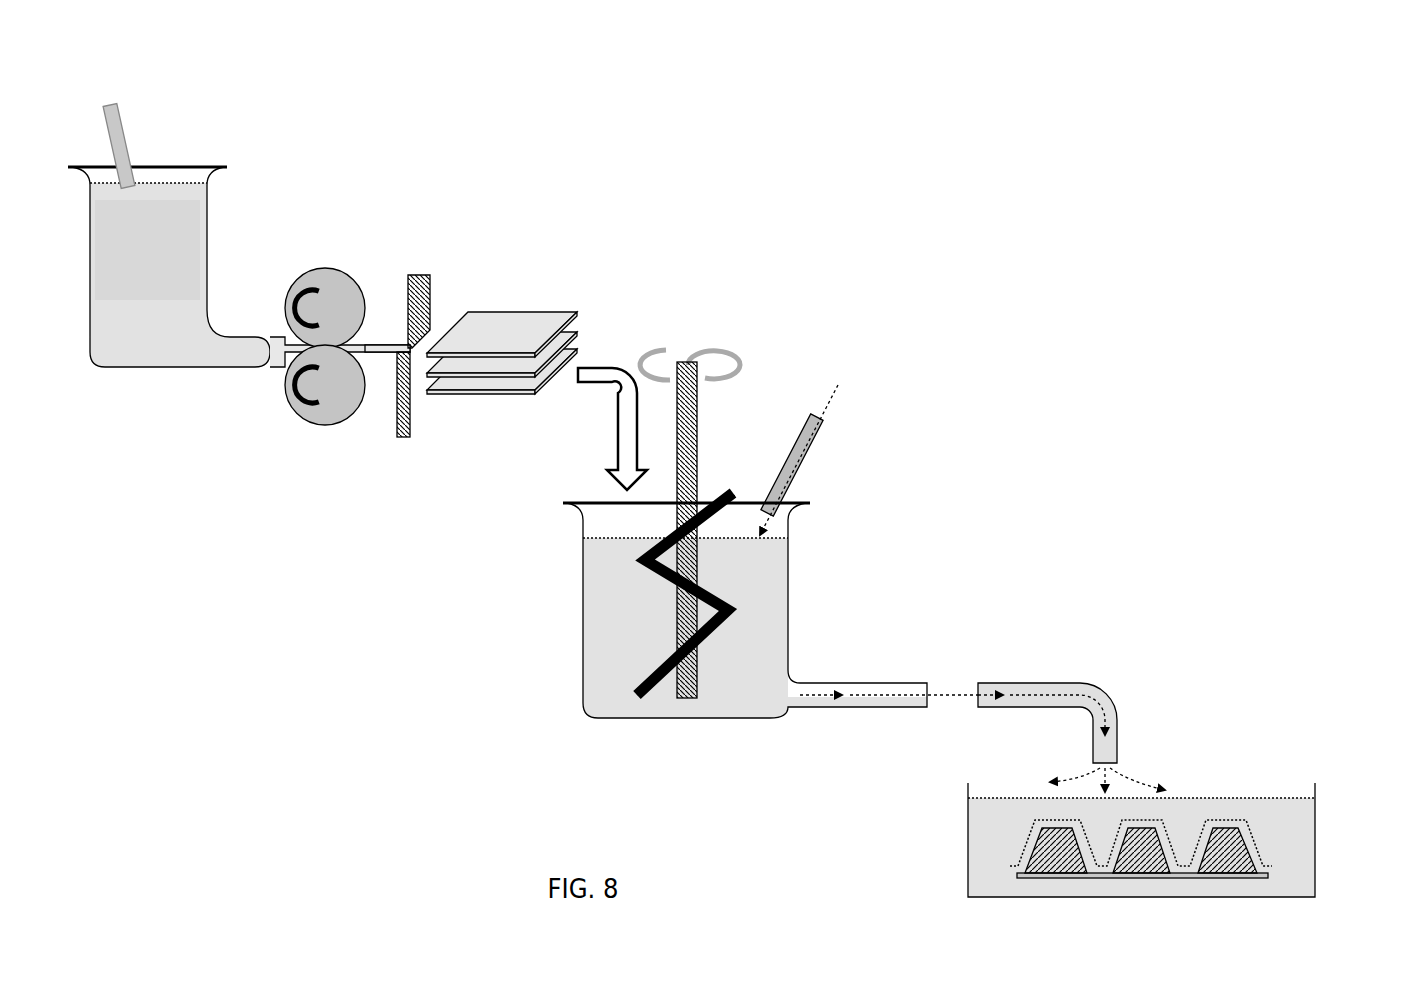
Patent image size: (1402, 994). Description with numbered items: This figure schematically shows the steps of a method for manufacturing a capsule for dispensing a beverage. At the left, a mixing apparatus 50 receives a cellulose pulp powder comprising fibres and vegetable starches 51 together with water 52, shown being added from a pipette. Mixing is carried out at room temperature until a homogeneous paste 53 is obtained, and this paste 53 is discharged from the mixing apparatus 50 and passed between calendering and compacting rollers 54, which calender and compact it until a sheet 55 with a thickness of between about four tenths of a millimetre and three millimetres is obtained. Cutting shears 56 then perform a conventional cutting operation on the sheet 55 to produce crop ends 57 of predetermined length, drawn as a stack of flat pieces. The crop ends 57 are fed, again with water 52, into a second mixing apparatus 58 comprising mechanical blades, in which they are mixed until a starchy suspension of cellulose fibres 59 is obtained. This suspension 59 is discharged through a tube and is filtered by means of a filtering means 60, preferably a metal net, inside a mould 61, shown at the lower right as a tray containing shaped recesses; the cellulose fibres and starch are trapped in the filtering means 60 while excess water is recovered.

The mixing apparatus 50 is at (208, 267).
The cellulose pulp powder comprising fibres and vegetable starches 51 is at (145, 315).
The water 52 is at (128, 143).
The homogeneous paste 53 is at (285, 350).
The calendering and compacting rollers 54 is at (315, 420).
The sheet 55 is at (370, 345).
The cutting shears 56 is at (402, 437).
The crop ends 57 is at (500, 310).
The mixing beaker 58 is at (792, 617).
The starchy suspension of cellulose fibres 59 is at (913, 690).
The filtering means 60 is at (1227, 822).
The mould 61 is at (1227, 858).